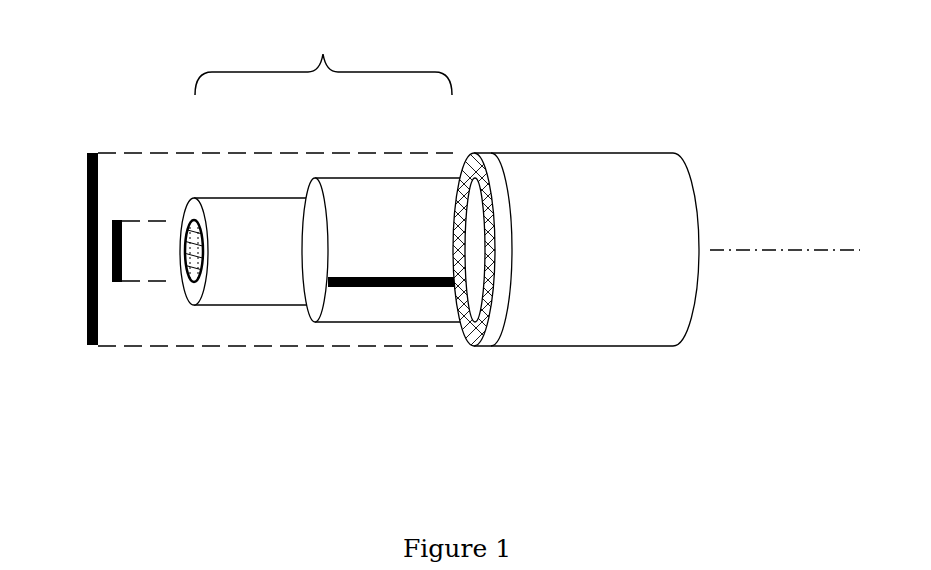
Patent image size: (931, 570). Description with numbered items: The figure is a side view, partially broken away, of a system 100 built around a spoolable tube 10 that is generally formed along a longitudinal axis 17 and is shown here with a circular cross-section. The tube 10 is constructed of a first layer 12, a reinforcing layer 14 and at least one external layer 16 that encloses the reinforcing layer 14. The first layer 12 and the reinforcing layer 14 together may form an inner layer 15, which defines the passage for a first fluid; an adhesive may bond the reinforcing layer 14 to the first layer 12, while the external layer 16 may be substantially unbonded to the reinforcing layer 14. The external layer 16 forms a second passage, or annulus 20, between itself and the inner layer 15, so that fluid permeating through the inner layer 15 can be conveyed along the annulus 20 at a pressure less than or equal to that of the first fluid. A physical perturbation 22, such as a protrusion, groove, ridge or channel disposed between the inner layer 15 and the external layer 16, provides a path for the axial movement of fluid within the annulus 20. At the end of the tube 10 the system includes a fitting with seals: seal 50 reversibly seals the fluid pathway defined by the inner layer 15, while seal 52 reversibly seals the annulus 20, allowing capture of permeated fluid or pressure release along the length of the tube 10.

The system 100 is at (118, 66).
The tube 10 is at (648, 124).
The first layer 12 is at (222, 207).
The reinforcing layer 14 is at (366, 192).
The inner layer 15 is at (323, 57).
The external layer 16 is at (565, 193).
The longitudinal axis 17 is at (795, 250).
The annulus 20 is at (460, 340).
The physical perturbation 22 is at (402, 288).
The seal 50 is at (117, 283).
The seal 52 is at (87, 305).